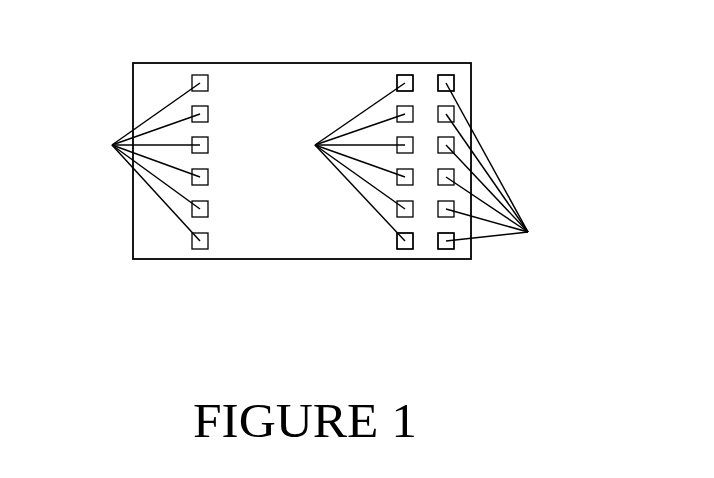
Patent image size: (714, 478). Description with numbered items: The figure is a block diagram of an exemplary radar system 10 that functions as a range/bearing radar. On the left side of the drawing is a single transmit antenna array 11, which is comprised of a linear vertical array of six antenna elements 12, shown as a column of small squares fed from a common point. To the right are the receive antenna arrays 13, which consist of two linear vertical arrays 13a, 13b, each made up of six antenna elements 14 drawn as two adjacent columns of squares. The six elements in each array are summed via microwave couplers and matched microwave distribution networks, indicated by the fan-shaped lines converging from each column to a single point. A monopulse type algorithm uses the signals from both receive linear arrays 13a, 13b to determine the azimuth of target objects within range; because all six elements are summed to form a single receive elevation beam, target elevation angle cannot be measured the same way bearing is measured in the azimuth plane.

The radar system 10 is at (500, 78).
The transmit antenna array 11 is at (205, 63).
The antenna elements 12 is at (136, 162).
The receive antenna arrays 13 is at (423, 50).
The linear vertical array 13a is at (400, 259).
The linear vertical array 13b is at (449, 259).
The antenna elements 14 is at (421, 171).